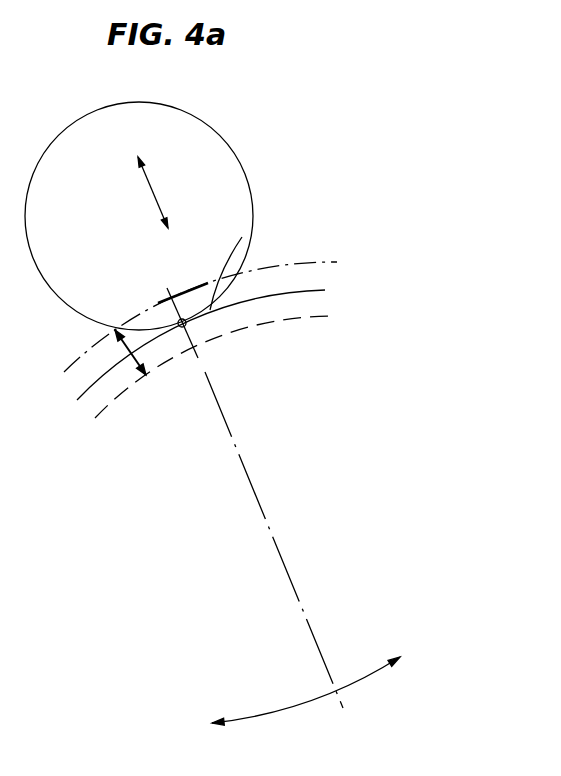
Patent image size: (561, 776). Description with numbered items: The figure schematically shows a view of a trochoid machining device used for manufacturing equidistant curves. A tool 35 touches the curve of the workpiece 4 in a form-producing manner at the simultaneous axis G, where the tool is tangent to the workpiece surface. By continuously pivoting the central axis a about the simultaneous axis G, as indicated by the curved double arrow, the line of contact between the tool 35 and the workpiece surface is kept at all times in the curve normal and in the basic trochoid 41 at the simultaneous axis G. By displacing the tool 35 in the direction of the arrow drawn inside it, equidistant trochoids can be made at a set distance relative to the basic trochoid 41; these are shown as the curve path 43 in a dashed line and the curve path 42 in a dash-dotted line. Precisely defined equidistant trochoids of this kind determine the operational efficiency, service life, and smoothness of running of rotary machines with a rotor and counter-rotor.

The tool 35 is at (149, 115).
The curve path 42 is at (306, 262).
The basic trochoid 41 is at (318, 288).
The curve path 43 is at (323, 316).
The workpiece 4 is at (63, 405).
The simultaneous axis G is at (186, 323).
The central axis a is at (338, 690).